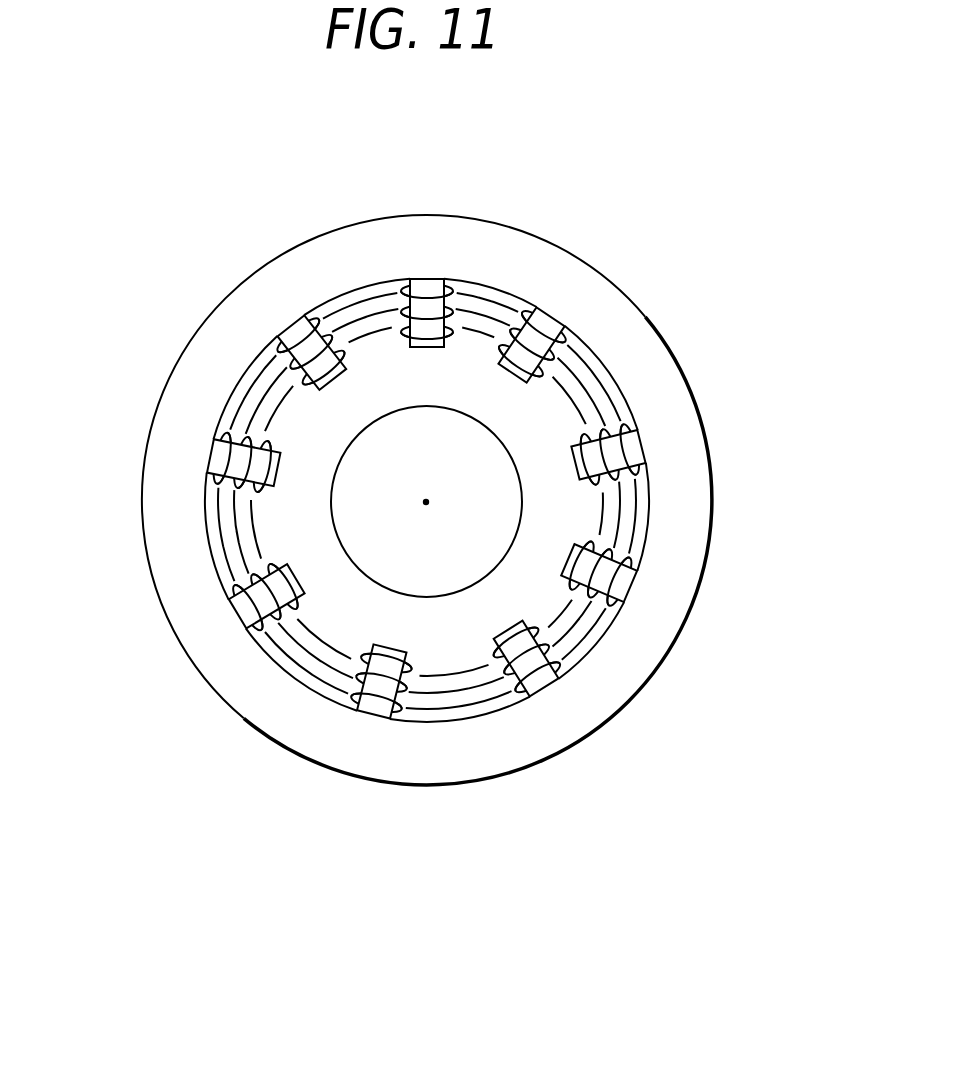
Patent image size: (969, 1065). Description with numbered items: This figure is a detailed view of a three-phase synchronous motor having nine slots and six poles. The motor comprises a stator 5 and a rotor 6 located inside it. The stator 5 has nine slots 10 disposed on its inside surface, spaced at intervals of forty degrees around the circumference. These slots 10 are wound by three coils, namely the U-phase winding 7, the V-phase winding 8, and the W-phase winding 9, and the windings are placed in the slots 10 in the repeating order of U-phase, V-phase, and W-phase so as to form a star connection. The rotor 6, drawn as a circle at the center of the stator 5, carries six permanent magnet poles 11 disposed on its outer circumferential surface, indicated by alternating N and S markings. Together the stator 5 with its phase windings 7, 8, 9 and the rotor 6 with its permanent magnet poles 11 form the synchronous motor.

The stator 5 is at (608, 313).
The rotor 6 is at (505, 446).
The U-phase winding 7 is at (232, 584).
The V-phase winding 8 is at (358, 700).
The W-phase winding 9 is at (514, 700).
The slot 10 is at (633, 445).
The permanent magnet pole 11 is at (512, 500).